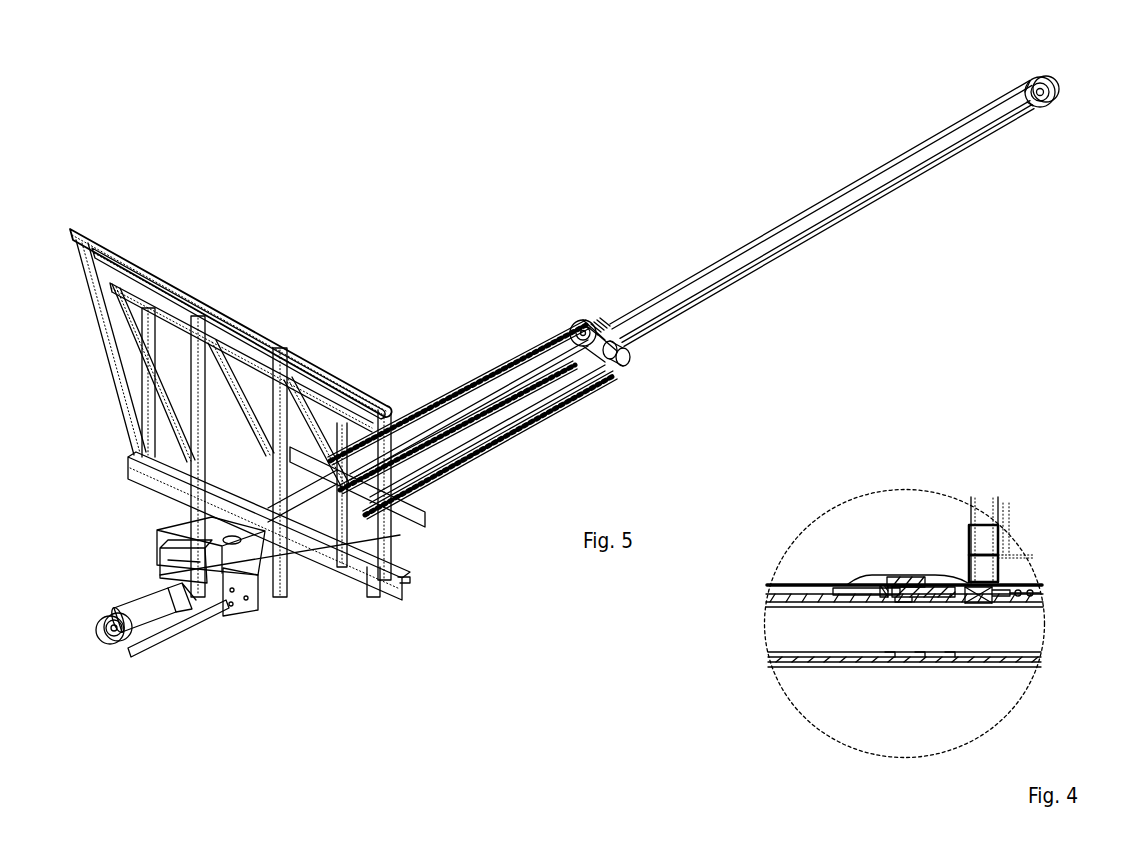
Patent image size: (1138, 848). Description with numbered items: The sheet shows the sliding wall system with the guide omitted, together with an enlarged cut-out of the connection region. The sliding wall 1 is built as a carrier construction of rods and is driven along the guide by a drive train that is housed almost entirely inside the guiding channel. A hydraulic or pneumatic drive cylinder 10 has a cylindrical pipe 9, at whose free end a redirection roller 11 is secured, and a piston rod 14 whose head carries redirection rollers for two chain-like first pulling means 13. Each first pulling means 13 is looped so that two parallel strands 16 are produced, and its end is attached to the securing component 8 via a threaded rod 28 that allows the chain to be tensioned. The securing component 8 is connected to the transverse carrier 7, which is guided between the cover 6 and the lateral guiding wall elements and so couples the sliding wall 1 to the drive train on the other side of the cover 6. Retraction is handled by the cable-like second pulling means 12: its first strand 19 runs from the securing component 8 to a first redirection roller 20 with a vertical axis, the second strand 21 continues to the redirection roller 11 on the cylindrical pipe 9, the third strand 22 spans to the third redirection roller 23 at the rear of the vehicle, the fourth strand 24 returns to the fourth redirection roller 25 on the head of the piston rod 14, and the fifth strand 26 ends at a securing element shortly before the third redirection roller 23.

In FIG. 5, the sliding wall 1 is at (228, 308).
In FIG. 4, the cover 6 is at (867, 580).
In FIG. 4, the transverse carrier 7 is at (893, 577).
In FIG. 5, the securing component 8 is at (202, 531).
In FIG. 4, the securing component 8 is at (910, 580).
In FIG. 5, the cylindrical pipe 9 is at (418, 437).
In FIG. 4, the cylindrical pipe 9 is at (867, 630).
In FIG. 5, the drive cylinder 10 is at (463, 420).
In FIG. 5, the redirection roller 11 is at (98, 646).
In FIG. 5, the second pulling means 12 is at (825, 201).
In FIG. 4, the second pulling means 12 is at (803, 595).
In FIG. 5, the first pulling means 13 is at (483, 403).
In FIG. 4, the first pulling means 13 is at (1037, 580).
In FIG. 5, the piston rod 14 is at (570, 388).
In FIG. 5, the strands 16 is at (547, 375).
In FIG. 5, the first strand 19 is at (224, 562).
In FIG. 4, the first redirection roller 20 is at (980, 598).
In FIG. 5, the second strand 21 is at (122, 607).
In FIG. 5, the third strand 22 is at (903, 188).
In FIG. 5, the third redirection roller 23 is at (1049, 98).
In FIG. 5, the fourth strand 24 is at (925, 142).
In FIG. 5, the fourth redirection roller 25 is at (604, 342).
In FIG. 5, the fifth strand 26 is at (738, 276).
In FIG. 5, the threaded rod 28 is at (186, 583).